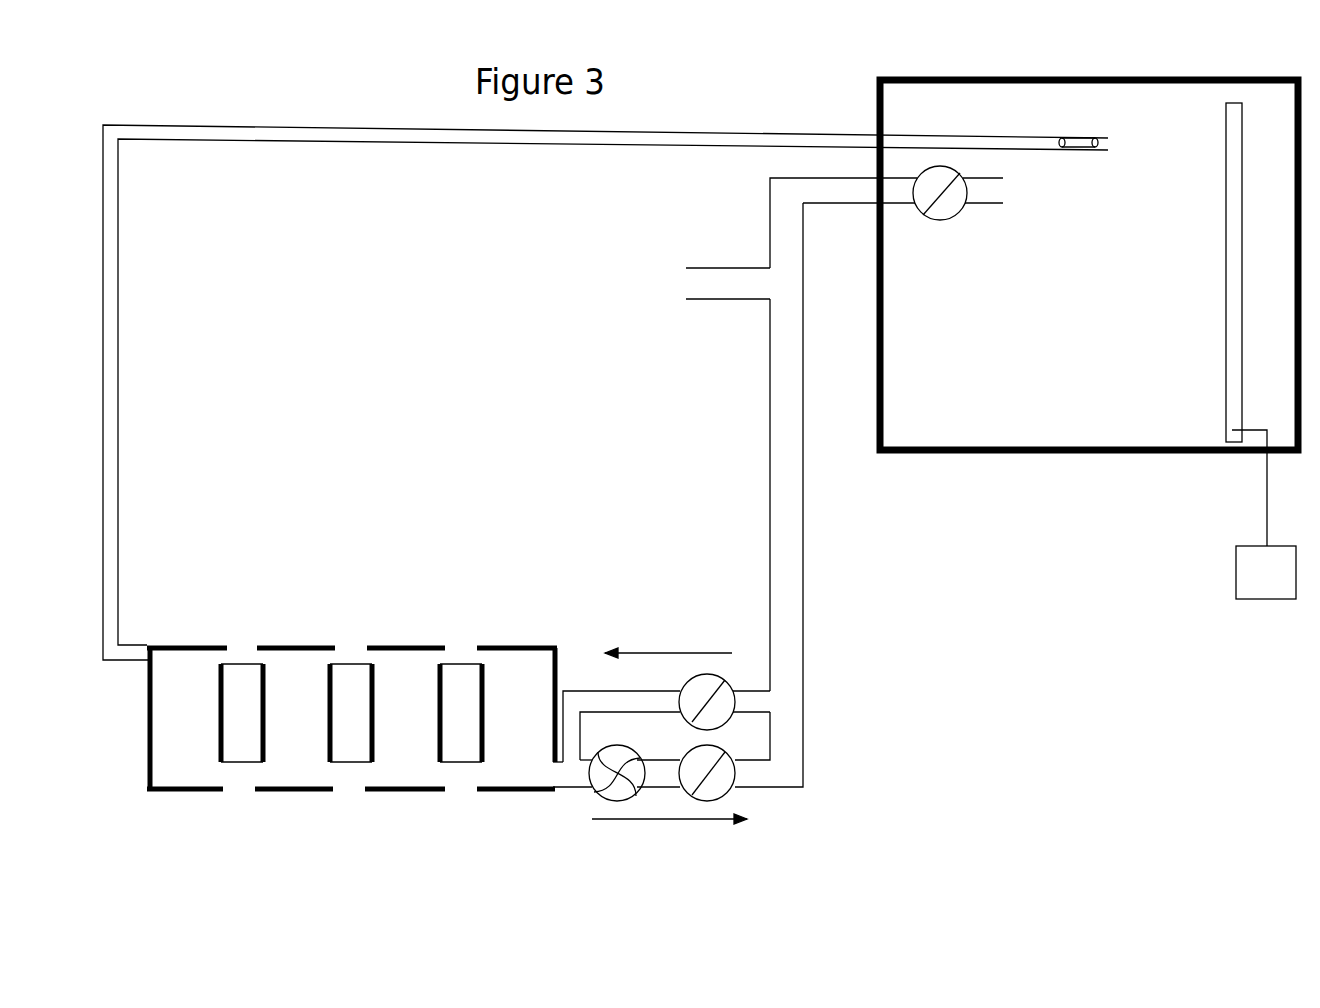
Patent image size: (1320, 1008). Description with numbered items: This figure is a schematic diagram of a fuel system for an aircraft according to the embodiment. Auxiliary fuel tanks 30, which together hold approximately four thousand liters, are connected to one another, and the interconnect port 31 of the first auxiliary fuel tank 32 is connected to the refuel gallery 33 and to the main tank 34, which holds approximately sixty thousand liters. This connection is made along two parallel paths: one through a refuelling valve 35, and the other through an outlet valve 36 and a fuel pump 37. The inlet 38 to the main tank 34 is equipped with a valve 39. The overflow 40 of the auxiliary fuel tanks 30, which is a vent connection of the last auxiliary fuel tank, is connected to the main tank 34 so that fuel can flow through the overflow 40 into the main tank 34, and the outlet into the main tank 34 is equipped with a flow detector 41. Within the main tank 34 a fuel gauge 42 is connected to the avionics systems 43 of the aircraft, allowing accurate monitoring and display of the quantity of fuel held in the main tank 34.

The auxiliary fuel tanks 30 is at (503, 640).
The interconnect port 31 is at (568, 790).
The first auxiliary fuel tank 32 is at (510, 642).
The refuel gallery 33 is at (682, 288).
The main tank 34 is at (1062, 462).
The refuelling valve 35 is at (703, 668).
The outlet valve 36 is at (703, 802).
The fuel pump 37 is at (610, 810).
The inlet 38 is at (1003, 193).
The valve 39 is at (942, 223).
The overflow 40 is at (123, 543).
The flow detector 41 is at (1080, 153).
The fuel gauge 42 is at (1218, 260).
The avionics systems 43 is at (1245, 599).